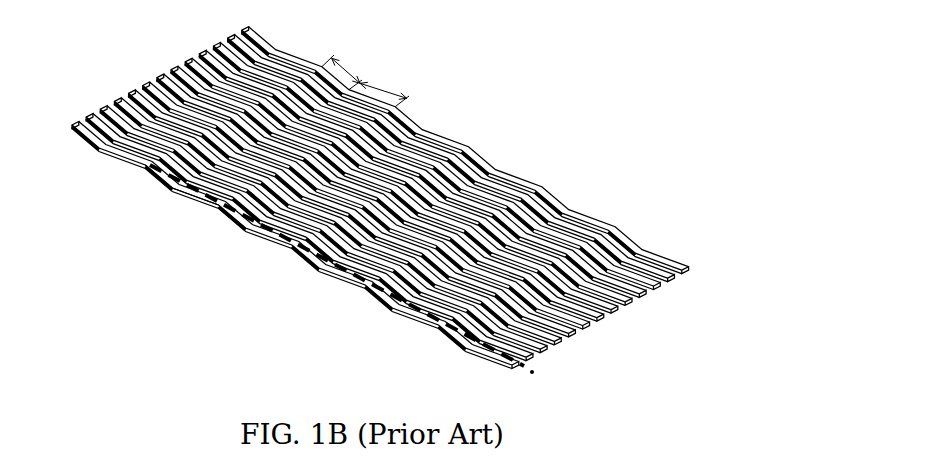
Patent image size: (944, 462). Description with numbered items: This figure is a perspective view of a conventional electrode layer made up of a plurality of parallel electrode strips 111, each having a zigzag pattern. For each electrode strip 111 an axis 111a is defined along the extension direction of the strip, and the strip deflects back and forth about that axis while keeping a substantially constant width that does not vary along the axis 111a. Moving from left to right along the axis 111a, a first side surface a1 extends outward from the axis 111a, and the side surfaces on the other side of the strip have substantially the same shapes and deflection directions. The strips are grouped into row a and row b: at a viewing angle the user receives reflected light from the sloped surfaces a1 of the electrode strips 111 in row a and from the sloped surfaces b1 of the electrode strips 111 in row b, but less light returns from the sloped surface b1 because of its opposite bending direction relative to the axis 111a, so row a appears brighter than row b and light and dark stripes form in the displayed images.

The electrode strip 111 is at (79, 121).
The axis 111a is at (541, 367).
The first side surface a1 is at (160, 180).
The sloped surface b1 is at (197, 200).
The row a is at (342, 68).
The row b is at (384, 86).